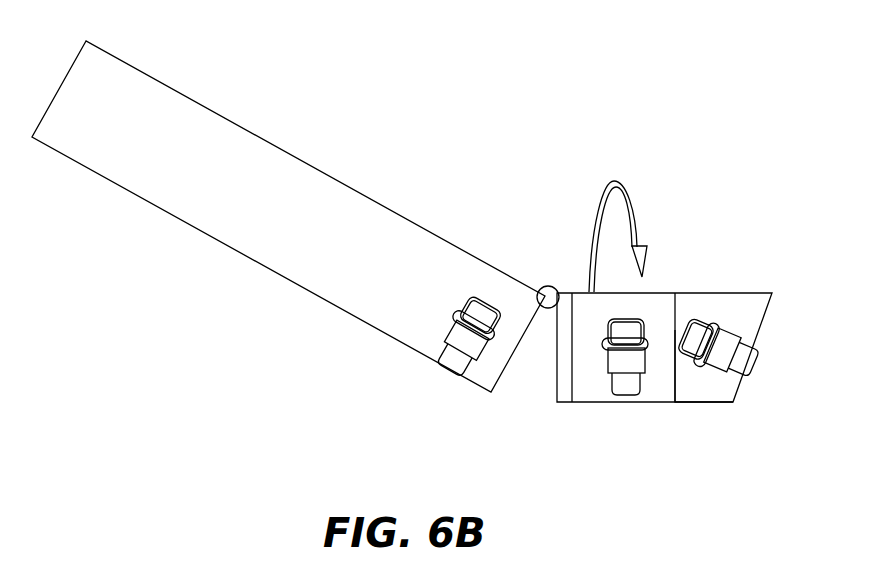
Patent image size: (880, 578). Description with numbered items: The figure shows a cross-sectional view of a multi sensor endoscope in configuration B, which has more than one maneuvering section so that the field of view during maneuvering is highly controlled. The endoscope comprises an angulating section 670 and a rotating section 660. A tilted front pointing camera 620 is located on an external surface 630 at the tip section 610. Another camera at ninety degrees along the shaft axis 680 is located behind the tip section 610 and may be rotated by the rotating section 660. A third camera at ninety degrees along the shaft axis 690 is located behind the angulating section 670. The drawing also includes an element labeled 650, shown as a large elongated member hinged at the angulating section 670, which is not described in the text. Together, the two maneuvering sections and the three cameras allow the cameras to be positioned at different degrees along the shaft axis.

The tip section 610 is at (757, 305).
The tilted front pointing camera 620 is at (722, 350).
The external surface 630 is at (728, 392).
The lid 650 is at (246, 190).
The rotating section 660 is at (640, 213).
The angulating section 670 is at (548, 286).
The camera at 90 degrees along the shaft axis 680 is at (627, 363).
The third camera at 90 degrees along the shaft axis 690 is at (458, 333).